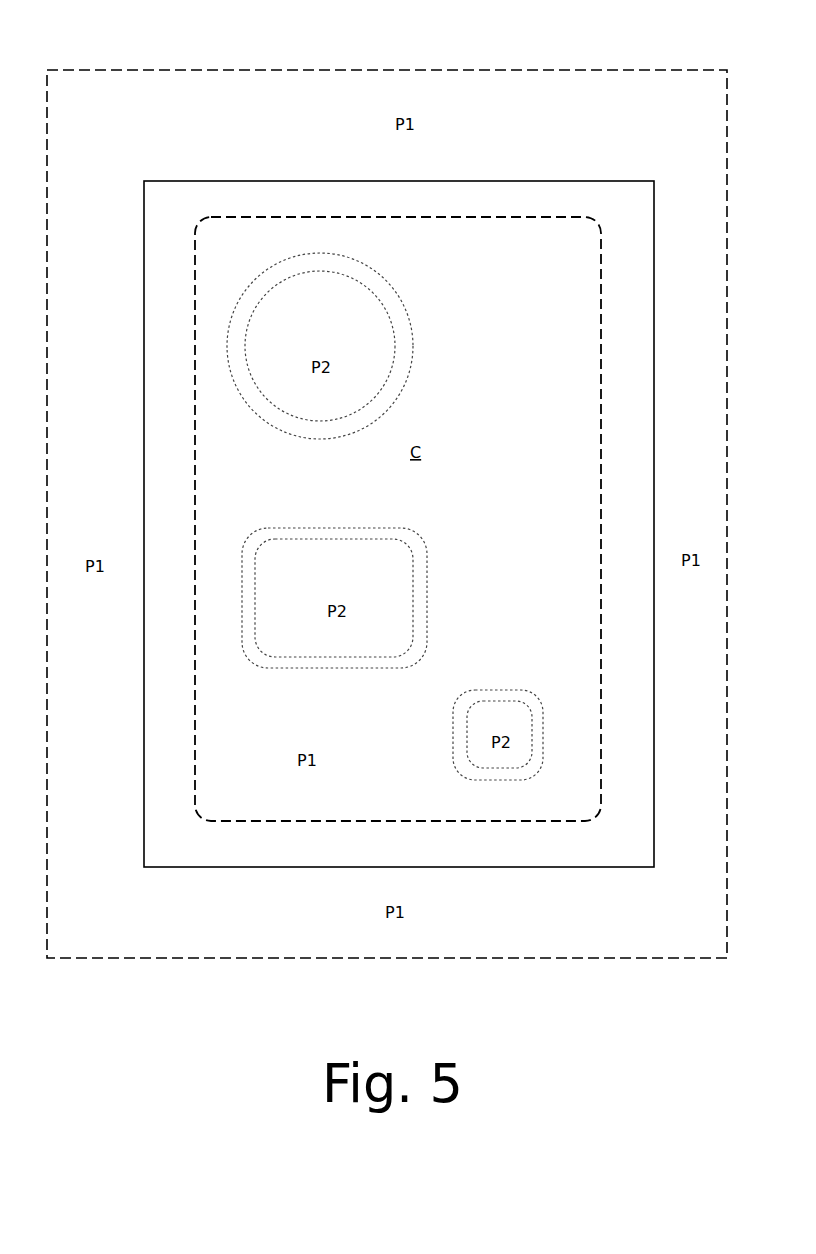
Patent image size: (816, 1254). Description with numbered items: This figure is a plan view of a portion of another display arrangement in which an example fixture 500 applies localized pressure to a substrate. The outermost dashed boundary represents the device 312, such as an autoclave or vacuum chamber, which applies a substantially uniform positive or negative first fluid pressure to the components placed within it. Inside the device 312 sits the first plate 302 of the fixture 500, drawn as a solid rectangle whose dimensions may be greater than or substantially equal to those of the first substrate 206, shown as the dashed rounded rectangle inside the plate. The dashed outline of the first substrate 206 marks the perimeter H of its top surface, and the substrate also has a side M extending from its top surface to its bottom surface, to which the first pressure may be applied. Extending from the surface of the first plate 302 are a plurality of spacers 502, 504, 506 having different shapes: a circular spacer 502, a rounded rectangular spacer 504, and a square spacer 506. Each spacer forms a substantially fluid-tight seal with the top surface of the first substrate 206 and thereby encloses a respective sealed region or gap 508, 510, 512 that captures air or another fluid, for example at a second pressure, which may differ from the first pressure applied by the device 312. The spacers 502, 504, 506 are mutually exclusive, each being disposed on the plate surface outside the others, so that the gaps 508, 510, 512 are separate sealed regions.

The device 312 is at (267, 70).
The first plate 302 is at (335, 181).
The fixture 500 is at (490, 165).
The first substrate 206 is at (595, 815).
The perimeter H is at (601, 352).
The side M is at (195, 468).
The spacer 502 is at (413, 340).
The sealed region or gap 508 is at (323, 320).
The spacer 504 is at (427, 597).
The sealed region or gap 510 is at (362, 563).
The spacer 506 is at (498, 690).
The sealed region or gap 512 is at (497, 717).